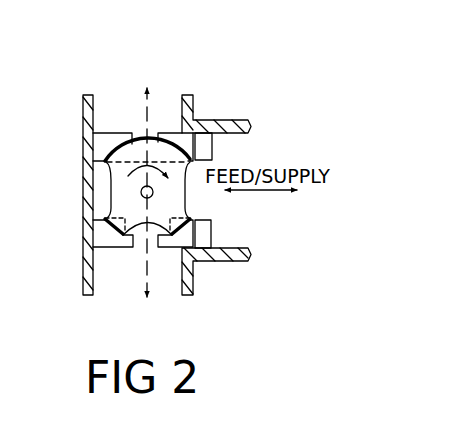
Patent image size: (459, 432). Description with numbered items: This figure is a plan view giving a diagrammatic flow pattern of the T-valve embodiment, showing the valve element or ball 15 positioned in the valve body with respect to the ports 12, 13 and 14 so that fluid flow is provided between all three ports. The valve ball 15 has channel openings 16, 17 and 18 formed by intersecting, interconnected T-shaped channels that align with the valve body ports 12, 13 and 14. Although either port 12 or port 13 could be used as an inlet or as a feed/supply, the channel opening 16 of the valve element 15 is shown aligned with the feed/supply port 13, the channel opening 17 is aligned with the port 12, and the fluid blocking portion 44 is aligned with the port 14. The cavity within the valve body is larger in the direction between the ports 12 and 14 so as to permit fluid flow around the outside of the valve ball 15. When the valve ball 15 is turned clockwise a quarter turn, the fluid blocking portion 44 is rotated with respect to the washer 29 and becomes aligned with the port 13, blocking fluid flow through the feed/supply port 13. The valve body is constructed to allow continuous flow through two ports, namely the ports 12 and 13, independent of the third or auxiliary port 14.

The port 12 is at (125, 275).
The feed/supply port 13 is at (223, 231).
The port 14 is at (124, 93).
The valve element or ball 15 is at (136, 150).
The channel opening 16 is at (188, 193).
The channel opening 17 is at (130, 238).
The channel opening 18 is at (100, 190).
The washer 29 is at (201, 126).
The fluid blocking portion 44 is at (149, 139).